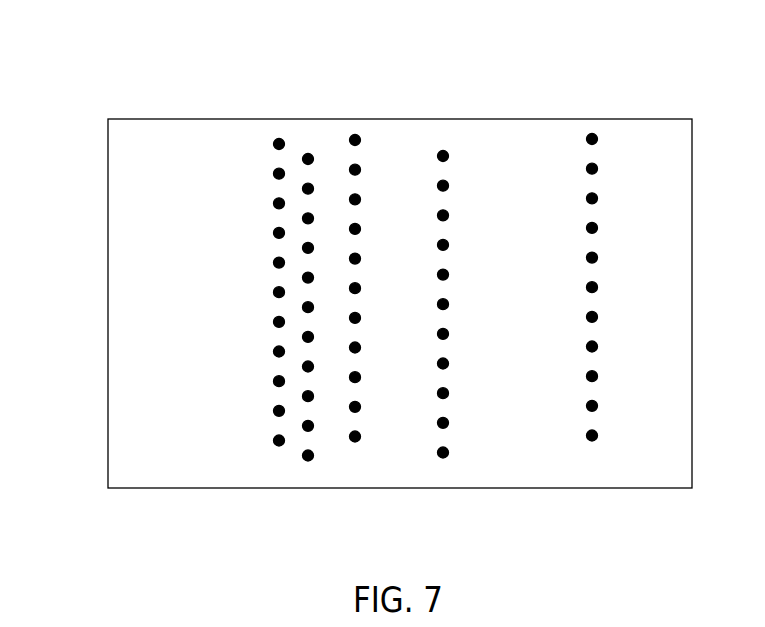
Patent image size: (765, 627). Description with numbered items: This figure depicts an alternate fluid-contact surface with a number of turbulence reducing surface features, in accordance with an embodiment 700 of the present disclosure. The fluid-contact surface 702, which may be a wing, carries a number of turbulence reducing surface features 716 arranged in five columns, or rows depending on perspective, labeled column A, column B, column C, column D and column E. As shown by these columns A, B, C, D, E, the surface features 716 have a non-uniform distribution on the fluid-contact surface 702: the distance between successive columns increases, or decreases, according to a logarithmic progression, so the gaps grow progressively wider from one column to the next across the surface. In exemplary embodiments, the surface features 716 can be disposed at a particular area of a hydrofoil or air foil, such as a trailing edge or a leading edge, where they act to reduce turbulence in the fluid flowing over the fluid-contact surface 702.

The embodiment 700 is at (131, 104).
The fluid-contact surface 702 is at (190, 454).
The turbulence reducing surface features 716 is at (259, 237).
The column A is at (279, 446).
The column B is at (308, 461).
The column C is at (355, 442).
The column D is at (443, 458).
The column E is at (592, 441).